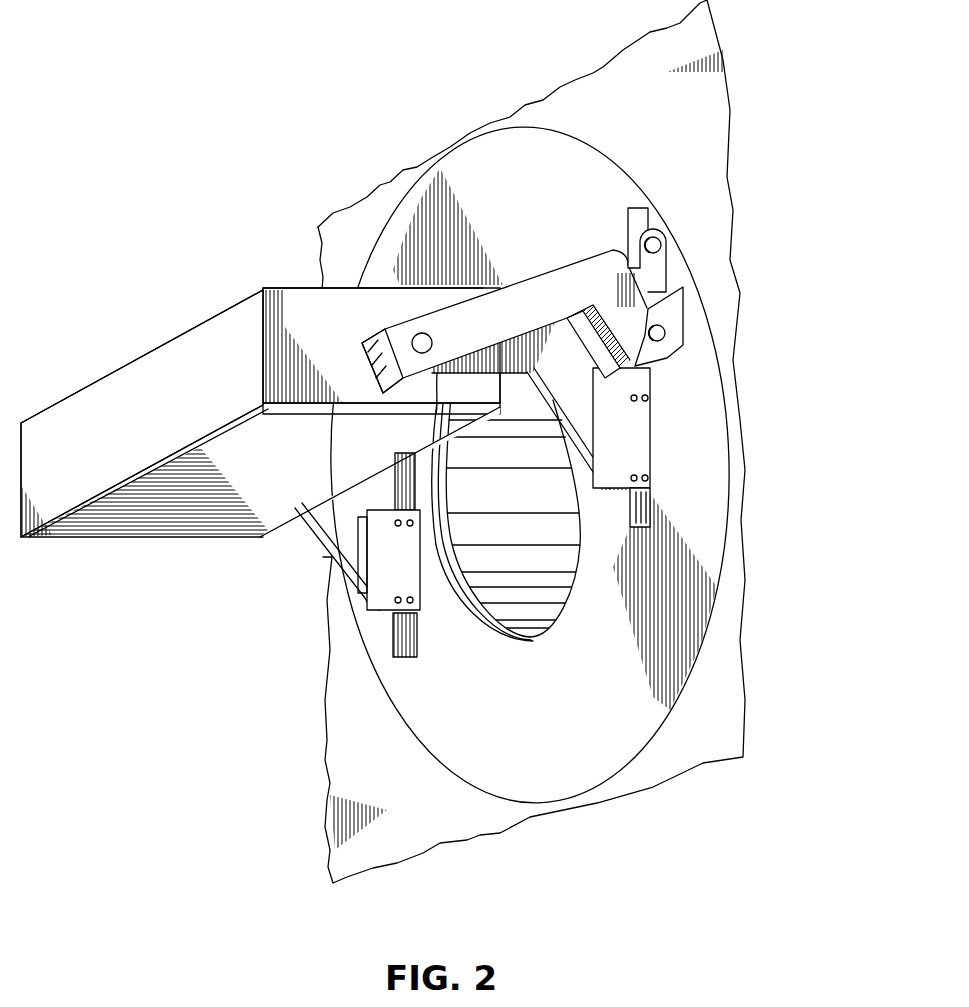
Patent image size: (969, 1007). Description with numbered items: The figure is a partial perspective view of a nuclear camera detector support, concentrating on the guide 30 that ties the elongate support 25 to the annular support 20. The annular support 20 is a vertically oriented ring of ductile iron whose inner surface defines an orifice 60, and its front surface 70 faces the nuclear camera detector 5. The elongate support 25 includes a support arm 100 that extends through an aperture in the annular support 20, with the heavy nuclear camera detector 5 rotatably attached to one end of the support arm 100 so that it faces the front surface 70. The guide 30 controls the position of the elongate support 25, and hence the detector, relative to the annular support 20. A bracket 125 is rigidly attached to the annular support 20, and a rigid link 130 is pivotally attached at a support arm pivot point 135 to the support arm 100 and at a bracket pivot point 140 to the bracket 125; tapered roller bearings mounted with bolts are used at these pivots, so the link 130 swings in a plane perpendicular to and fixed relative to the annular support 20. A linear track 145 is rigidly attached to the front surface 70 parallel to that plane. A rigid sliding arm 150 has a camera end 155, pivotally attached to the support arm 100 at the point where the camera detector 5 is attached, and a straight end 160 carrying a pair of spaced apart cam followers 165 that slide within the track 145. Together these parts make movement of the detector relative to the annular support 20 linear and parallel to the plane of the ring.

The nuclear camera detector 5 is at (160, 347).
The annular support 20 is at (515, 782).
The elongate support 25 is at (555, 255).
The guide 30 is at (240, 697).
The orifice 60 is at (600, 528).
The front surface 70 is at (570, 727).
The support arm 100 is at (523, 292).
The bracket 125 is at (617, 250).
The rigid link 130 is at (653, 268).
The support arm pivot point 135 is at (658, 338).
The bracket pivot point 140 is at (663, 243).
The linear track 145 is at (640, 508).
The rigid sliding arm 150 is at (340, 573).
The camera end 155 is at (436, 414).
The straight end 160 is at (617, 412).
The cam follower 165 is at (423, 610).